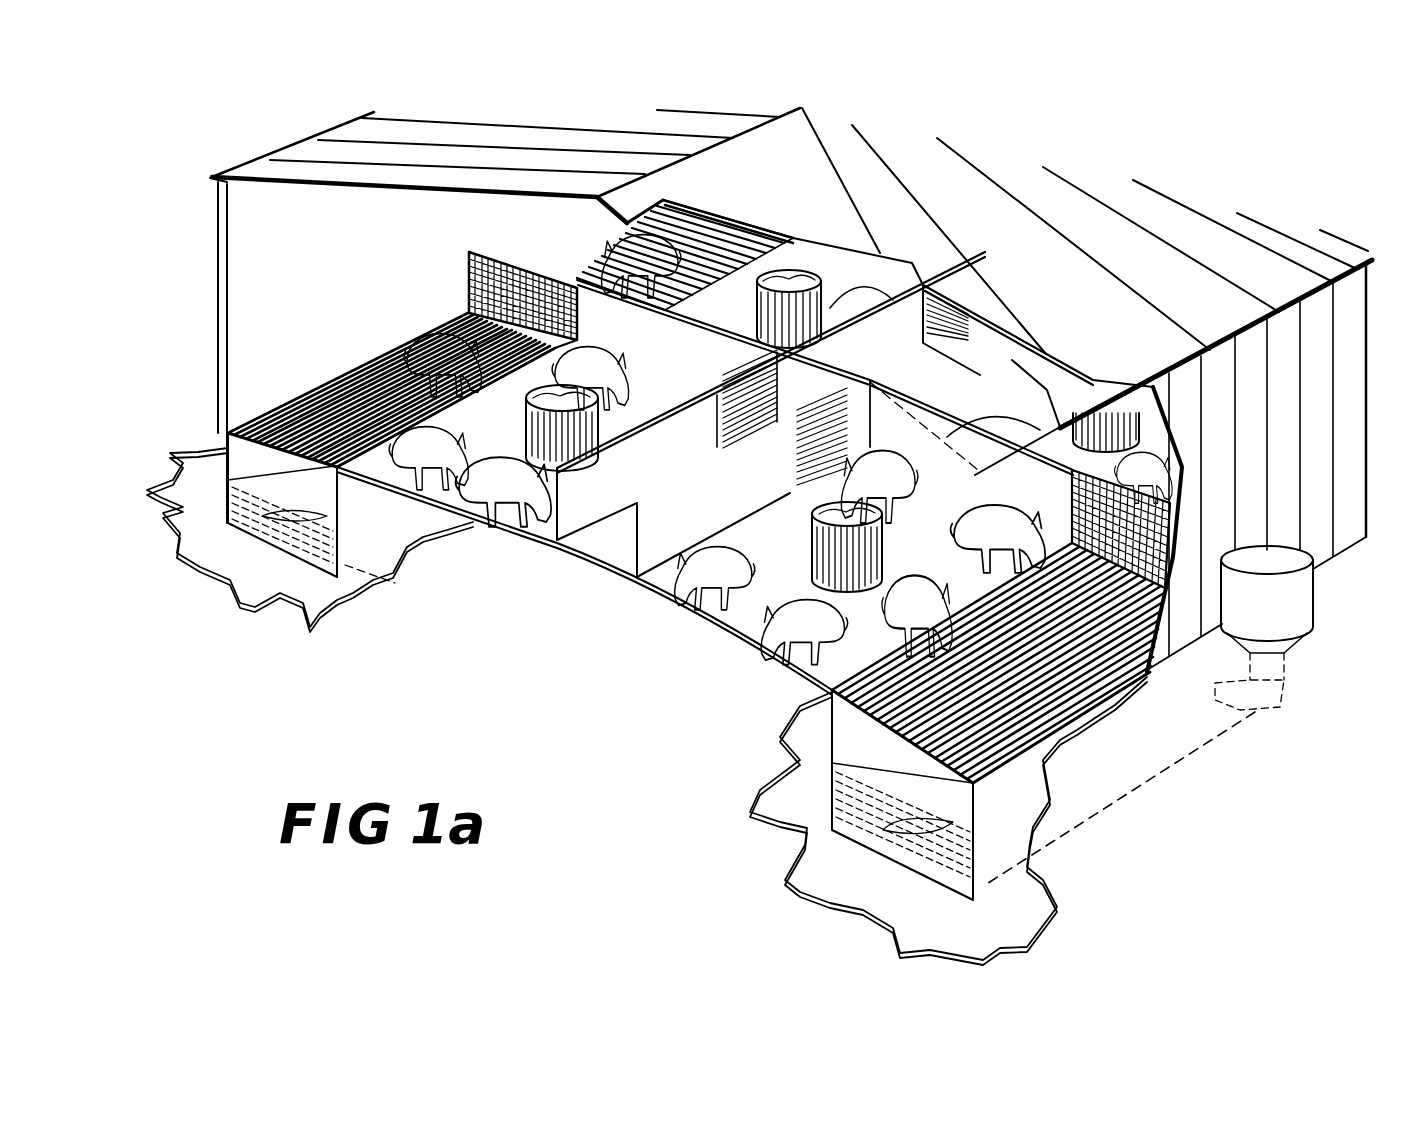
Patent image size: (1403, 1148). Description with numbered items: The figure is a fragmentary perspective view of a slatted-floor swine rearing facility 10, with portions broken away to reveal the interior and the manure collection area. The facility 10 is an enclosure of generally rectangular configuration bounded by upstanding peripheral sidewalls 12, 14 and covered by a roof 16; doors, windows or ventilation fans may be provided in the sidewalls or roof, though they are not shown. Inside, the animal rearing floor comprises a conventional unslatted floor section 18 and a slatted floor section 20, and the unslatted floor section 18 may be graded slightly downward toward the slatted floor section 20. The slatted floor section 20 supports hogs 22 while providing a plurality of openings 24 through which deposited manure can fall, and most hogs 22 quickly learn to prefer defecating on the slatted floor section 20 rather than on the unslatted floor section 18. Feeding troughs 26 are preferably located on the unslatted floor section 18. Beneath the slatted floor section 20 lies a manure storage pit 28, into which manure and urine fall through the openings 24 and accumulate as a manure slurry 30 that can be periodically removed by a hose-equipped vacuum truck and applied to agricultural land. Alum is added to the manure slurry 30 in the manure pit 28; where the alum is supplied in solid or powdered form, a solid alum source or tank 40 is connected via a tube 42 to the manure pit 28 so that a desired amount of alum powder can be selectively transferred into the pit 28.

The swine rearing facility 10 is at (448, 712).
The sidewall 12 is at (1343, 352).
The sidewall 14 is at (252, 280).
The roof 16 is at (1170, 240).
The unslatted floor section 18 is at (712, 615).
The slatted floor section 20 is at (338, 378).
The hogs 22 is at (613, 247).
The openings 24 is at (392, 352).
The feeding troughs 26 is at (537, 432).
The manure storage pit 28 is at (250, 447).
The manure slurry 30 is at (232, 566).
The solid alum source or tank 40 is at (1298, 600).
The tube 42 is at (1282, 690).